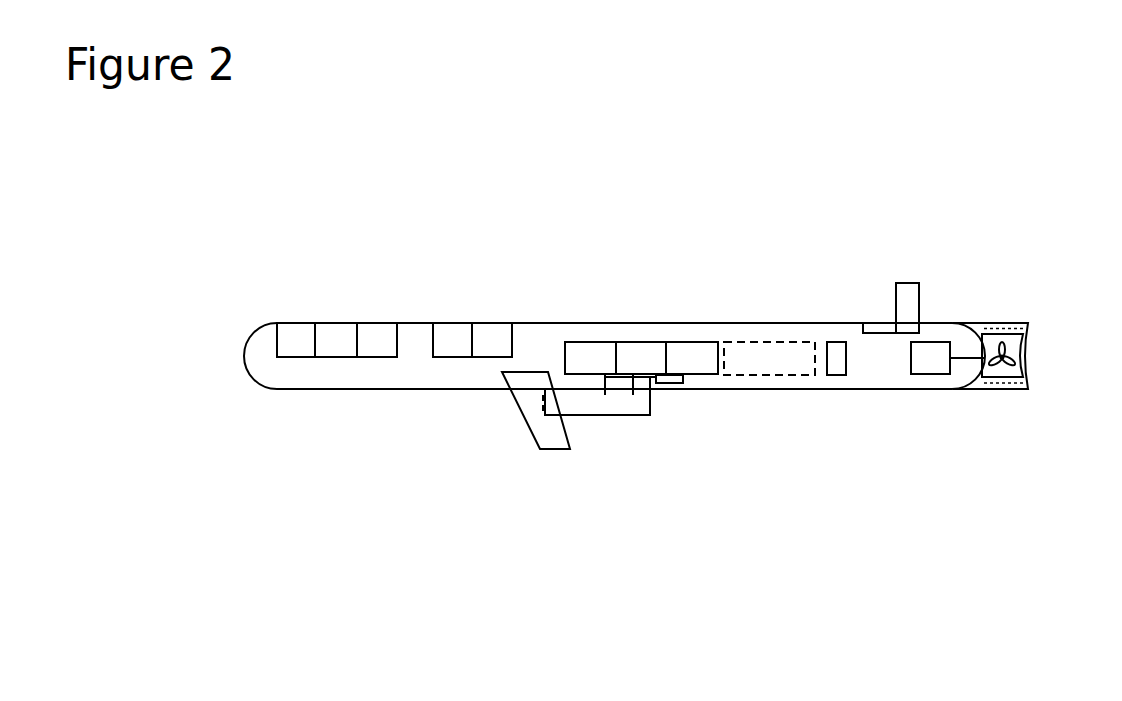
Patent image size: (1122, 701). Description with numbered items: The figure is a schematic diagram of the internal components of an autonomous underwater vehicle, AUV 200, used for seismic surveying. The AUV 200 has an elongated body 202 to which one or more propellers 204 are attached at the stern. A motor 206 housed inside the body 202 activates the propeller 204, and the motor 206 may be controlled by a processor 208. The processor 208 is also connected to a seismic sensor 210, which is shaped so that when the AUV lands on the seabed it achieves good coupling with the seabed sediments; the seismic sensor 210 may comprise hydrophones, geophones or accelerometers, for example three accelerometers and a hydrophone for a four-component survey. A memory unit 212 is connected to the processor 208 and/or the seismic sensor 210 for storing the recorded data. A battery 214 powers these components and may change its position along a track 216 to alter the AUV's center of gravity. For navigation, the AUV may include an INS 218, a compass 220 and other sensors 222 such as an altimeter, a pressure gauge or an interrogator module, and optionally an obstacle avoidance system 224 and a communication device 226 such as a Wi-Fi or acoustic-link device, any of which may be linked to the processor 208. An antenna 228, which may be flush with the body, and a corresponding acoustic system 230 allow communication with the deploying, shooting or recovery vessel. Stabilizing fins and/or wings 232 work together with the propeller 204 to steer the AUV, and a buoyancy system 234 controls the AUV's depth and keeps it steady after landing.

The AUV 200 is at (689, 187).
The body 202 is at (414, 360).
The propeller 204 is at (1007, 345).
The motor 206 is at (928, 367).
The processor 208 is at (644, 353).
The seismic sensor 210 is at (595, 415).
The memory unit 212 is at (588, 353).
The battery 214 is at (693, 352).
The track 216 is at (777, 353).
The INS 218 is at (498, 348).
The compass 220 is at (448, 348).
The other sensors 222 is at (377, 350).
The obstacle avoidance system 224 is at (334, 334).
The communication device 226 is at (293, 333).
The antenna 228 is at (913, 298).
The acoustic system 230 is at (883, 333).
The stabilizing fins and/or wings 232 is at (540, 447).
The buoyancy system 234 is at (837, 362).